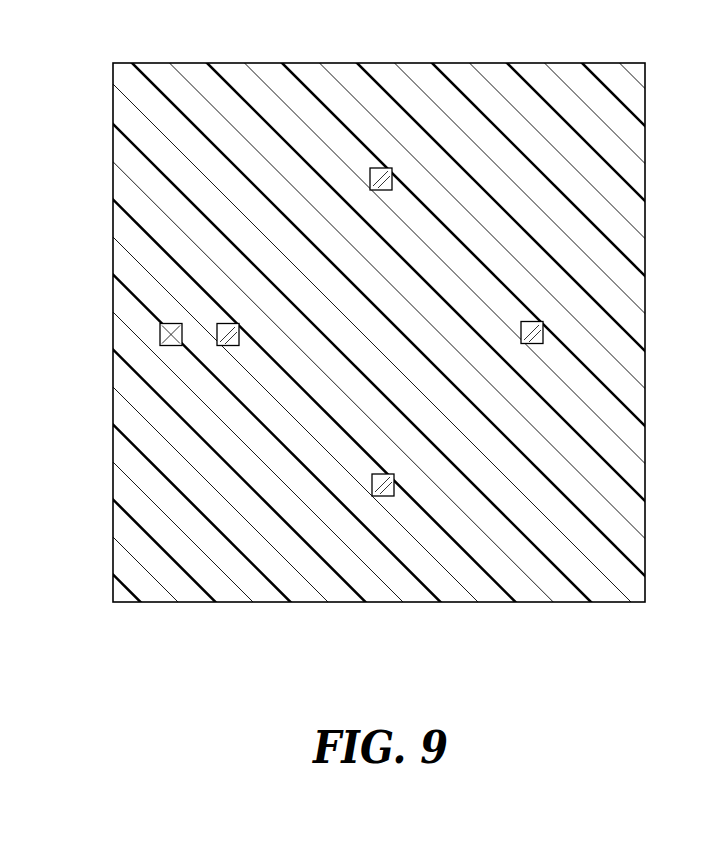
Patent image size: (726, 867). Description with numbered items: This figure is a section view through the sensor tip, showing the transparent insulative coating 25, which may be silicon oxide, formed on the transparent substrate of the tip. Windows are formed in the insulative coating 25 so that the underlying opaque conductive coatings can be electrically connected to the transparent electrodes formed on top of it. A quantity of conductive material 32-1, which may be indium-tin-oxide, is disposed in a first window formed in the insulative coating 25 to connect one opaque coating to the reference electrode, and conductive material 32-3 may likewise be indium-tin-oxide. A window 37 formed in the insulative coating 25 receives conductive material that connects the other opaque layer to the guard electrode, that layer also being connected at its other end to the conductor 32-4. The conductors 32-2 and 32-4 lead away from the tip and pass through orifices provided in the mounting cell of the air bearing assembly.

The transparent insulative coating 25 is at (185, 513).
The conductive material 32-1 is at (543, 328).
The conductor 32-2 is at (234, 323).
The conductive material 32-3 is at (375, 168).
The conductor 32-4 is at (383, 496).
The window 37 is at (160, 337).